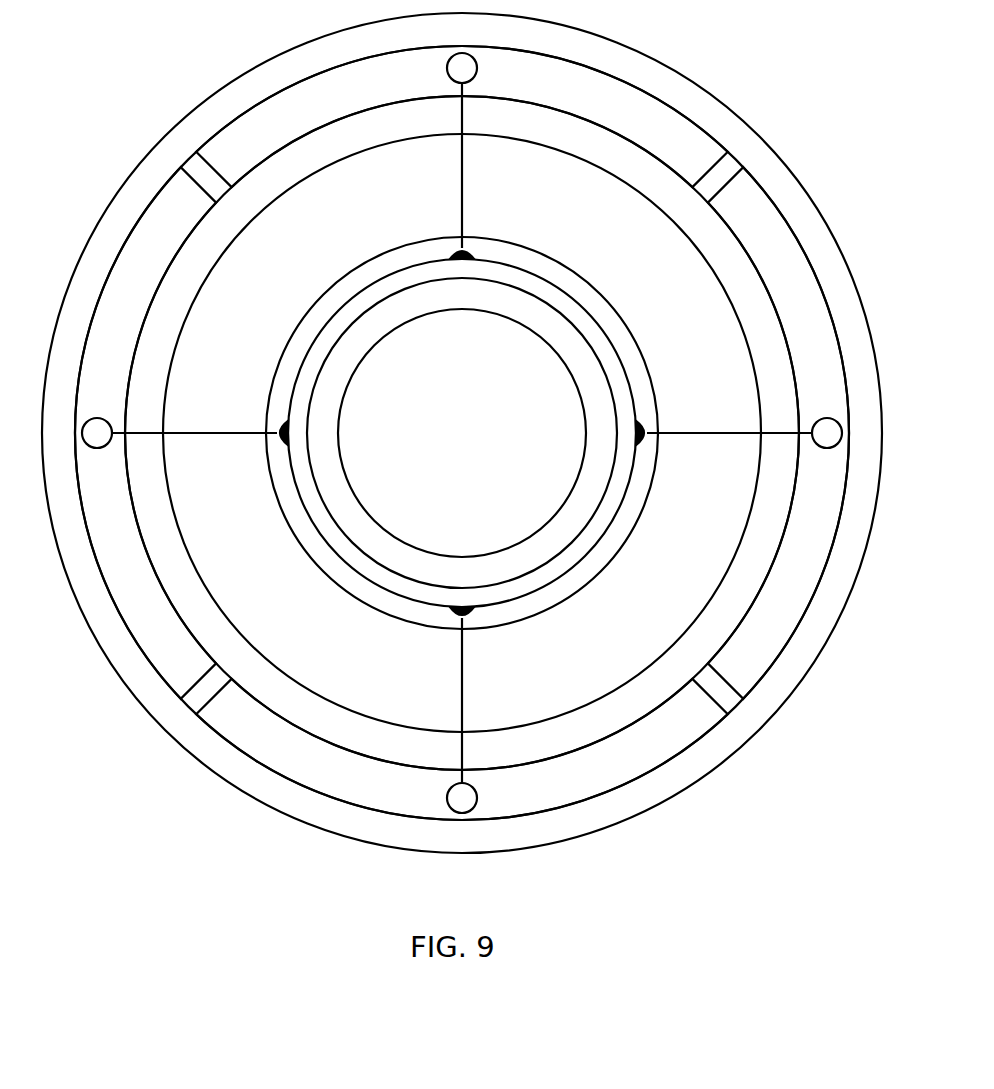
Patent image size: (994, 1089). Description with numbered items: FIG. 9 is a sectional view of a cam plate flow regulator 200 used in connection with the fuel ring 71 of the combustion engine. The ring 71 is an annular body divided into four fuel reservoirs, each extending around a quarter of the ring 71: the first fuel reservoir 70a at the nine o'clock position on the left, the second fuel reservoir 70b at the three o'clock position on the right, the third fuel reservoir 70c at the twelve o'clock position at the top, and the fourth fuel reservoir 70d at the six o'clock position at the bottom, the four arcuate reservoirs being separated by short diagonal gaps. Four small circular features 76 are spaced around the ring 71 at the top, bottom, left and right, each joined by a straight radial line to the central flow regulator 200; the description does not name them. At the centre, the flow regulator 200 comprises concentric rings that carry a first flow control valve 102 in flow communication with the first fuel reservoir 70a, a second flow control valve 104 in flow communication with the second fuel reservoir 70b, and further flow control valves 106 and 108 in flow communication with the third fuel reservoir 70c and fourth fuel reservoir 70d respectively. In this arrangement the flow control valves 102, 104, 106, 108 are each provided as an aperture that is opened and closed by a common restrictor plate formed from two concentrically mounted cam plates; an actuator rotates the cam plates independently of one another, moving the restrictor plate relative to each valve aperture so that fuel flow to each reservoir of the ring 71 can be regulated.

The ring 71 is at (235, 98).
The first fuel reservoir 70a is at (150, 238).
The second fuel reservoir 70b is at (795, 275).
The third fuel reservoir 70c is at (627, 107).
The fourth fuel reservoir 70d is at (648, 750).
The mounting hole with spoke 76 is at (461, 195).
The first flow control valve 102 is at (278, 440).
The second flow control valve 104 is at (645, 420).
The flow control valve 106 is at (452, 255).
The flow control valve 108 is at (473, 615).
The flow regulator 200 is at (552, 255).